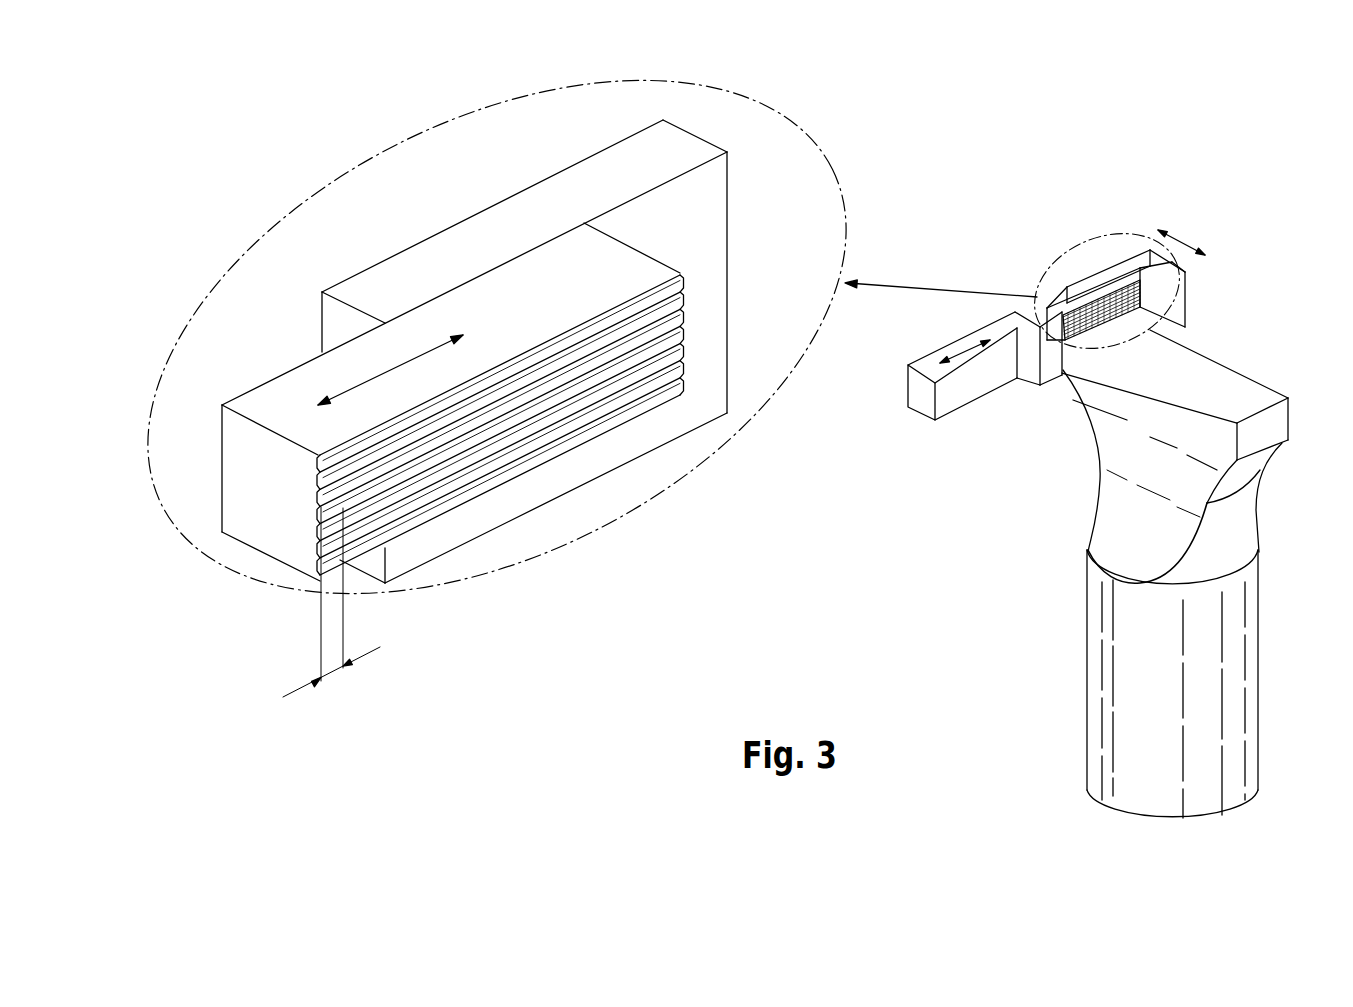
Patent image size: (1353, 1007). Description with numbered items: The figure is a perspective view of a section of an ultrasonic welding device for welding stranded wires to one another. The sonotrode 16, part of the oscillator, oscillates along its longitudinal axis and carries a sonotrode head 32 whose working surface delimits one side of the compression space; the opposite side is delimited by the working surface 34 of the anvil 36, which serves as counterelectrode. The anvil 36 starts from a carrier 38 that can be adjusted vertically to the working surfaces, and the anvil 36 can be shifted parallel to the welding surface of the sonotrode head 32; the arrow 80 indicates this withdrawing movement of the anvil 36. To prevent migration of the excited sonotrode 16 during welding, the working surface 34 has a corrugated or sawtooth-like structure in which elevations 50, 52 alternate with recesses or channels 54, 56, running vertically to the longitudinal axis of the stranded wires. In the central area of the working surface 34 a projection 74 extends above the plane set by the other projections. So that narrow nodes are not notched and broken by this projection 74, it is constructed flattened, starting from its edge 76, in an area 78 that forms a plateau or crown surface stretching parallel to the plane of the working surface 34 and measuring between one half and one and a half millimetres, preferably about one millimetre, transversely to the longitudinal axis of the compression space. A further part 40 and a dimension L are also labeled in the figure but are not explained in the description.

The sonotrode 16 is at (1232, 678).
The sonotrode head 32 is at (1203, 373).
The working surface 34 is at (622, 450).
The anvil 36 is at (305, 387).
The carrier 38 is at (517, 215).
The actuating bar 40 is at (997, 370).
The elevation 50 is at (319, 511).
The elevation 52 is at (320, 542).
The recess or channel 54 is at (319, 527).
The recess or channel 56 is at (318, 495).
The projection 74 is at (592, 385).
The edge 76 is at (318, 462).
The flattened area 78 is at (318, 478).
The arrow 80 is at (420, 352).
The thickness L is at (342, 670).